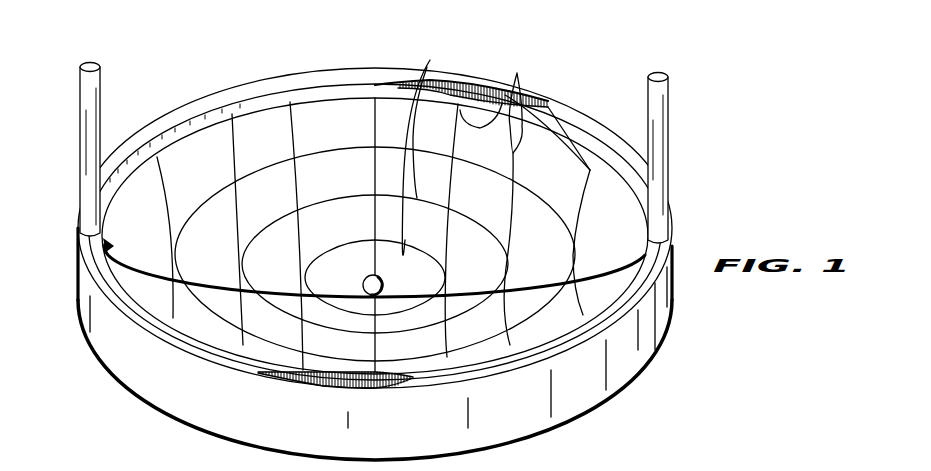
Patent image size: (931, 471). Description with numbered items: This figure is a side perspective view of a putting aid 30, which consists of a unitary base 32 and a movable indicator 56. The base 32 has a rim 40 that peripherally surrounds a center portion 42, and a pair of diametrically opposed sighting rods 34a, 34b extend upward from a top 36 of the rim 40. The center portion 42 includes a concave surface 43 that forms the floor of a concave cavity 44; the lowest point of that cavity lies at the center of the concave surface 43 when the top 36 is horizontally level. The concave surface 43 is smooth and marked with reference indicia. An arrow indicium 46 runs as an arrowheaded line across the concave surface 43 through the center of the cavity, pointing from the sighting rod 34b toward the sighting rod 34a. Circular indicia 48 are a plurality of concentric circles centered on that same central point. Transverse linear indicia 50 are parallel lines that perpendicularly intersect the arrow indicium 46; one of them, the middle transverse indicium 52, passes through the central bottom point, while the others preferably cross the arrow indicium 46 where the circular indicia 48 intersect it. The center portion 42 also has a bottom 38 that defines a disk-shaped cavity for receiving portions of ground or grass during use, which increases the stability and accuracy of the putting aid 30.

The putting aid 30 is at (143, 84).
The unitary base 32 is at (388, 70).
The sighting rod 34a is at (82, 100).
The sighting rod 34b is at (655, 107).
The top 36 is at (580, 125).
The bottom 38 is at (583, 415).
The rim 40 is at (127, 298).
The center portion 42 is at (250, 130).
The concave surface 43 is at (328, 110).
The concave cavity 44 is at (200, 157).
The arrow indicium 46 is at (218, 243).
The circular indicia 48 is at (430, 60).
The transverse linear indicia 50 is at (517, 73).
The middle transverse indicium 52 is at (372, 350).
The movable indicator 56 is at (362, 285).